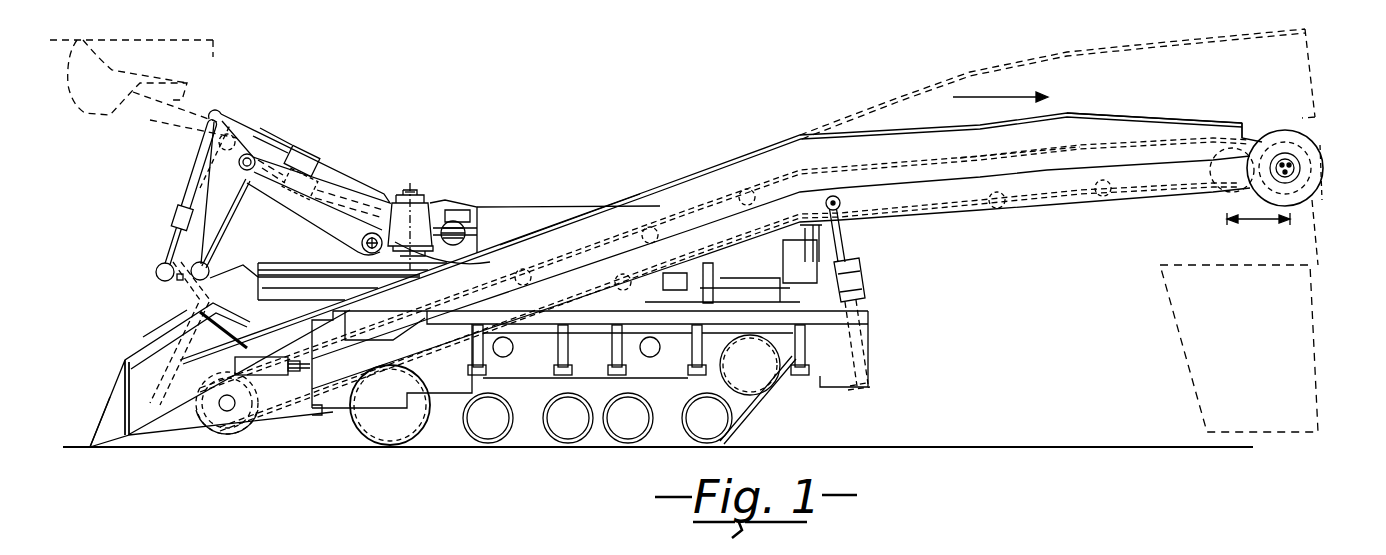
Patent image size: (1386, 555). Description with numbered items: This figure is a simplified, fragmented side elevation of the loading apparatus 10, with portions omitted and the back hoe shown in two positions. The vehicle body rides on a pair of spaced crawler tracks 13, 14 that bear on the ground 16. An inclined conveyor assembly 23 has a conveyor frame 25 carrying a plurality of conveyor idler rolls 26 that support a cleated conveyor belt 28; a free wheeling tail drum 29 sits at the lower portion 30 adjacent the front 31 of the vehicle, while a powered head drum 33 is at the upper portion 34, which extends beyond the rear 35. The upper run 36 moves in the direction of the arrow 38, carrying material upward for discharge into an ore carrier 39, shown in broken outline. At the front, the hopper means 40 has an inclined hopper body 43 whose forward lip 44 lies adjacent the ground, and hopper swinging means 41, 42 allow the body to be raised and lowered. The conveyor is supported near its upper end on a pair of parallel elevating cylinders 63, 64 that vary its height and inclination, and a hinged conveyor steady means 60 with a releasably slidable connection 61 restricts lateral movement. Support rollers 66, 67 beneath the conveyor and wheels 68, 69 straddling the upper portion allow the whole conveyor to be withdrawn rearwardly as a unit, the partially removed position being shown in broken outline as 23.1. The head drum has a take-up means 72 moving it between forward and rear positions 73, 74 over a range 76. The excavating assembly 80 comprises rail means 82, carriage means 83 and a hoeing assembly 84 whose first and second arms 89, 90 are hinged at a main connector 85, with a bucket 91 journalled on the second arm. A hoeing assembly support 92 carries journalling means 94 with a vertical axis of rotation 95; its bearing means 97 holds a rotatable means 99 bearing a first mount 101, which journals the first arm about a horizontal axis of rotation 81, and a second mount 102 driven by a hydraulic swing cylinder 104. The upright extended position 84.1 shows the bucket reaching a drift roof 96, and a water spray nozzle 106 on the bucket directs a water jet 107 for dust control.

The loading apparatus 10 is at (665, 95).
The crawler track 13 is at (577, 390).
The crawler track 14 is at (745, 413).
The ground 16 is at (897, 447).
The conveyor assembly 23 is at (721, 223).
The conveyor frame 25 is at (810, 130).
The partially removed conveyor assembly 23.1 is at (969, 63).
The conveyor idler rolls 26 is at (1040, 218).
The conveyor belt 28 is at (877, 163).
The tail drum 29 is at (207, 429).
The lower portion 30 is at (213, 447).
The front 31 is at (322, 413).
The head drum 33 is at (1222, 195).
The upper portion 34 is at (1163, 117).
The rear 35 is at (868, 347).
The upper run 36 is at (963, 157).
The arrow 38 is at (984, 97).
The ore carrier 39 is at (1180, 357).
The hopper means 40 is at (113, 345).
The hopper swinging means 41 is at (272, 418).
The hopper swinging means 42 is at (298, 432).
The hopper body 43 is at (118, 383).
The forward lip 44 is at (88, 442).
The conveyor steady means 60 is at (828, 266).
The releasably slidable connection 61 is at (840, 228).
The elevating cylinder 63 is at (879, 279).
The elevating cylinder 64 is at (858, 284).
The support roller 66 is at (867, 357).
The support roller 67 is at (830, 393).
The wheel 68 is at (1285, 143).
The wheel 69 is at (1312, 160).
The take-up means 72 is at (1306, 152).
The extreme forward position 73 is at (781, 267).
The extreme rear position 74 is at (1309, 192).
The range 76 is at (1252, 243).
The excavating assembly 80 is at (360, 151).
The horizontal axis of rotation 81 is at (316, 231).
The rail means 82 is at (313, 267).
The carriage means 83 is at (563, 218).
The hoeing assembly 84 is at (343, 163).
The upright extended position of the hoeing assembly 84.1 is at (199, 101).
The main connector 85 is at (254, 106).
The first arm 89 is at (322, 203).
The second arm 90 is at (230, 195).
The bucket 91 is at (257, 263).
The hoeing assembly support 92 is at (438, 192).
The journalling means 94 is at (545, 214).
The vertical axis of rotation 95 is at (412, 192).
The drift roof 96 is at (214, 58).
The bearing means 97 is at (398, 197).
The rotatable means 99 is at (440, 247).
The first mount 101 is at (376, 238).
The second mount 102 is at (442, 220).
The hydraulic swing cylinder 104 is at (470, 227).
The water spray nozzle 106 is at (172, 250).
The water jet 107 is at (160, 323).